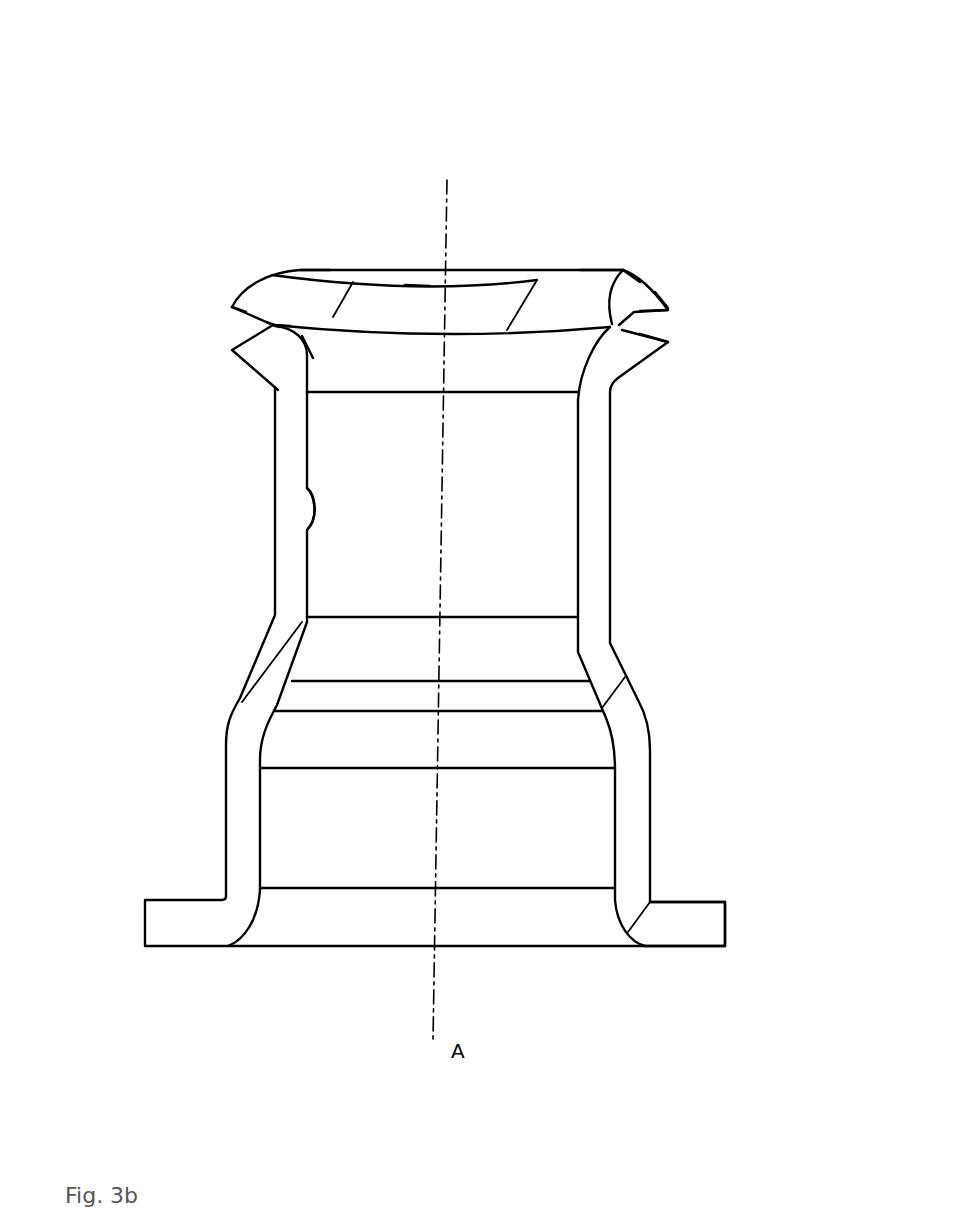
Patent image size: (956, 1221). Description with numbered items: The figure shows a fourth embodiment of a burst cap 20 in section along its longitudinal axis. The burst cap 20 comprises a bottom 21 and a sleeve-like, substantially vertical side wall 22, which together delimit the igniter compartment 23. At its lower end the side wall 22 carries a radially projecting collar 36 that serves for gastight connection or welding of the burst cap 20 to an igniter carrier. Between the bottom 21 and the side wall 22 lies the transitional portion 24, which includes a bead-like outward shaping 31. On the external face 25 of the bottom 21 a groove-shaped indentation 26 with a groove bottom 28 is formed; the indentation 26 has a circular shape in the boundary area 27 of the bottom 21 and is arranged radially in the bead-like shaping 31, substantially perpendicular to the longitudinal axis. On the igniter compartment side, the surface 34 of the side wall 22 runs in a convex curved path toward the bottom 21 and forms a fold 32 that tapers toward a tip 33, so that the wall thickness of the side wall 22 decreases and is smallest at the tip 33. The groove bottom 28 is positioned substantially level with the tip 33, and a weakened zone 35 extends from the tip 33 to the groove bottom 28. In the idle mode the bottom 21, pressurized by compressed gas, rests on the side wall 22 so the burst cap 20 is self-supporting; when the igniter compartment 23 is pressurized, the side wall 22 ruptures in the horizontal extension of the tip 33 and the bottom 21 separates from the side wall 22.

The burst cap 20 is at (650, 142).
The bottom 21 is at (417, 310).
The side wall 22 is at (604, 548).
The igniter compartment 23 is at (360, 847).
The transitional portion 24 is at (213, 327).
The external face 25 is at (313, 268).
The groove-shaped indentation 26 is at (643, 333).
The boundary area 27 is at (595, 269).
The groove bottom 28 is at (622, 330).
The bead-like outward shaping 31 is at (232, 306).
The fold 32 is at (307, 352).
The tip 33 is at (283, 325).
The igniter compartment side surface 34 is at (310, 528).
The weakened zone 35 is at (273, 324).
The collar 36 is at (692, 912).